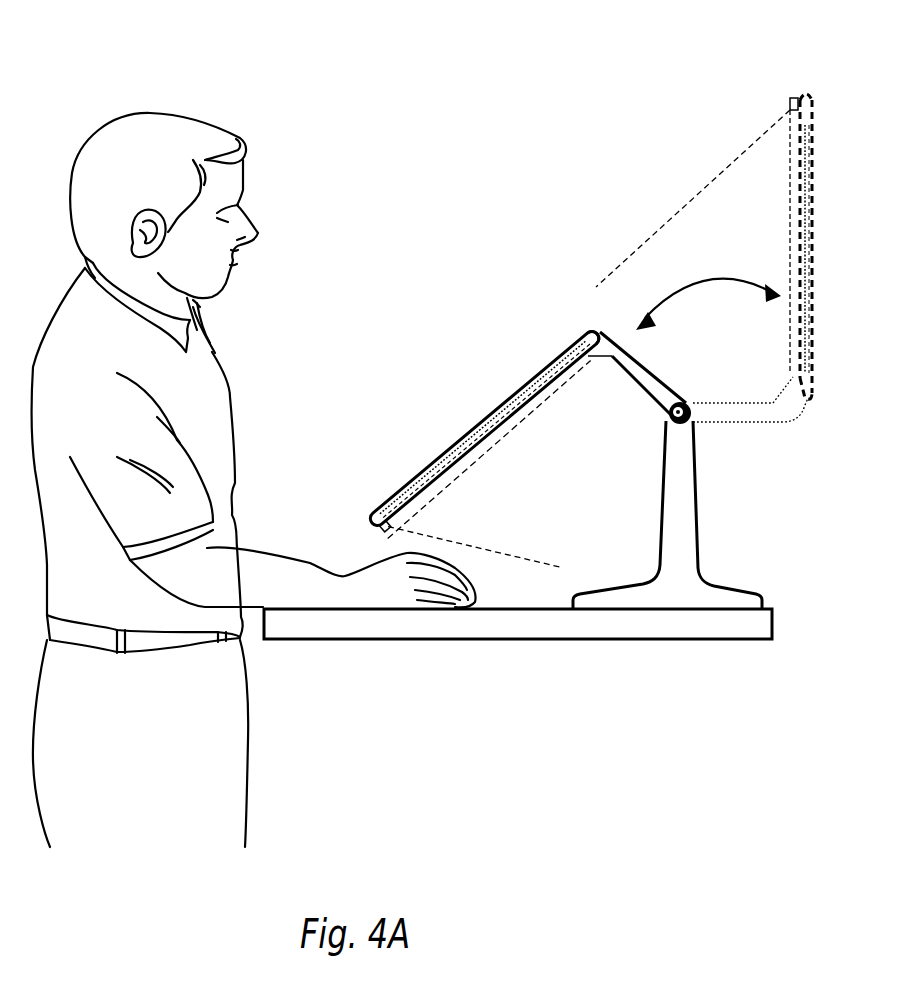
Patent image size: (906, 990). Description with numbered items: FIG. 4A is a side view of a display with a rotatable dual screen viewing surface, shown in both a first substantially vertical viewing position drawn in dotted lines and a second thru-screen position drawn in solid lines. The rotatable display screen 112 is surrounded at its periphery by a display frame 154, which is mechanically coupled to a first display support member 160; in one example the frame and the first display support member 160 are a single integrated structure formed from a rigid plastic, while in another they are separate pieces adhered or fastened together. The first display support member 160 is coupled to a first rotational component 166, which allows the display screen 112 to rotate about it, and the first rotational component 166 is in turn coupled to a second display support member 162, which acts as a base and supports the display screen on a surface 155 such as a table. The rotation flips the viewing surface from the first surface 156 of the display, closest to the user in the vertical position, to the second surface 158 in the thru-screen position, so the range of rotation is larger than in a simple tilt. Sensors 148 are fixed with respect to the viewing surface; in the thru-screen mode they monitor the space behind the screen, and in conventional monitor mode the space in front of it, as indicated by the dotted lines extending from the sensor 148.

The rotatable display screen 112 is at (527, 383).
The sensor 148 is at (378, 539).
The display frame 154 is at (580, 332).
The surface 155 is at (520, 610).
The first surface 156 is at (480, 447).
The second surface 158 is at (442, 457).
The first display support member 160 is at (648, 378).
The second display support member 162 is at (673, 515).
The first rotational component 166 is at (693, 421).